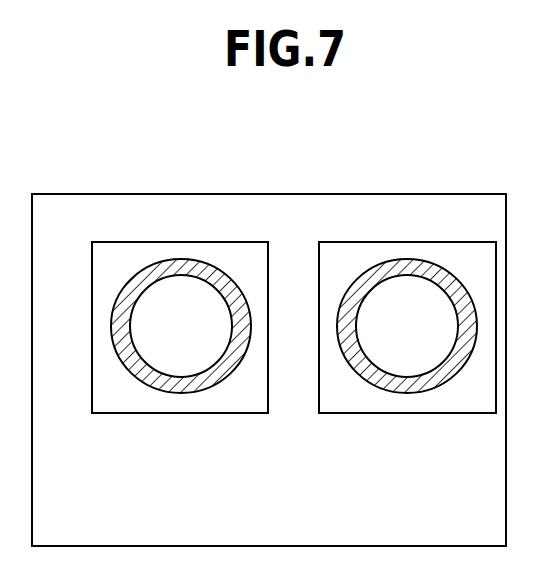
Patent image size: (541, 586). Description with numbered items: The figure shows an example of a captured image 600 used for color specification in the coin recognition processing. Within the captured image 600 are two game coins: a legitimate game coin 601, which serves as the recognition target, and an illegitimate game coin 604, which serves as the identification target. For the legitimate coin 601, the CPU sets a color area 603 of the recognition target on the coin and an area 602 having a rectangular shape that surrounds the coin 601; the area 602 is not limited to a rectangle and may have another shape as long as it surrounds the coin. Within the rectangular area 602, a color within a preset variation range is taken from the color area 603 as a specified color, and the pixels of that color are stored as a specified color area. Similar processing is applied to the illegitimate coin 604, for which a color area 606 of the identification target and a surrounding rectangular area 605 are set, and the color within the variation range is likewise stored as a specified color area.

The captured image 600 is at (247, 194).
The legitimate game coin 601 is at (132, 262).
The rectangular area 602 is at (129, 413).
The color area of the recognition target 603 is at (190, 383).
The illegitimate game coin 604 is at (362, 258).
The rectangular area 605 is at (362, 413).
The color area of the identification target 606 is at (419, 384).